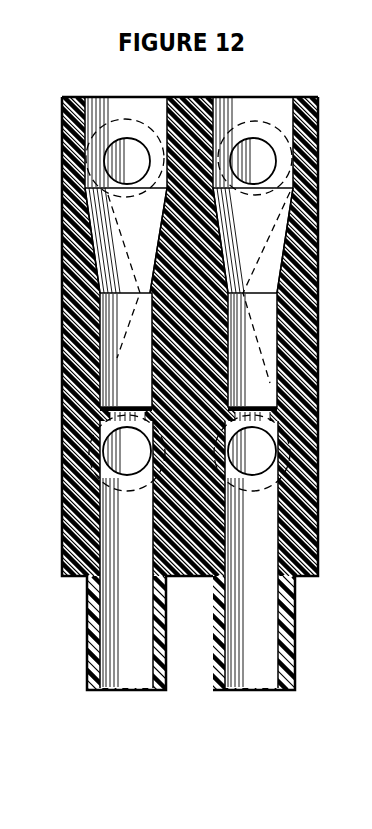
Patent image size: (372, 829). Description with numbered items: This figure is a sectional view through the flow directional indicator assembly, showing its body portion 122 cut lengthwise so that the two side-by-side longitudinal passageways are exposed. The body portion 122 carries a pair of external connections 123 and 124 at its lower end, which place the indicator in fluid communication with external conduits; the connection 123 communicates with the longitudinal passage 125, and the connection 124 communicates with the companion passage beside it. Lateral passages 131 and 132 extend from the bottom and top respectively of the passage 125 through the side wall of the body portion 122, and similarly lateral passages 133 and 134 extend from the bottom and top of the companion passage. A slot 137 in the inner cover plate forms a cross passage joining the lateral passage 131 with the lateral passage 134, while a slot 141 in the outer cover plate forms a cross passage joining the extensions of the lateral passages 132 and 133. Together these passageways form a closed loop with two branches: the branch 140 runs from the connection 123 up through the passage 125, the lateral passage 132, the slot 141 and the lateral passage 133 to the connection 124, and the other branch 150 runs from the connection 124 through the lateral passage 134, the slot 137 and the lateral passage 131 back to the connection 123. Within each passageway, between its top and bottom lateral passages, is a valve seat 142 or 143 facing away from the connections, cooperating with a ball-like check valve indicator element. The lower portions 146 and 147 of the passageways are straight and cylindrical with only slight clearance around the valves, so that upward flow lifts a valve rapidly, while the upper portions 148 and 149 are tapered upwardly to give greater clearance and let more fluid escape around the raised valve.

The body portion 122 is at (276, 410).
The external connection 123 is at (132, 685).
The external connection 124 is at (270, 685).
The longitudinal passage 125 is at (106, 344).
The lateral passage 131 is at (104, 453).
The lateral passage 132 is at (115, 162).
The lateral passage 133 is at (262, 455).
The lateral passage 134 is at (262, 163).
The slot 137 is at (283, 248).
The branch 140 is at (97, 373).
The slot 141 is at (86, 251).
The valve seat 142 is at (108, 409).
The valve seat 143 is at (268, 415).
The lower portion of passageway 146 is at (102, 317).
The lower portion of passageway 147 is at (268, 312).
The upper portion of passageway 148 is at (148, 234).
The upper portion of passageway 149 is at (275, 234).
The branch 150 is at (279, 337).